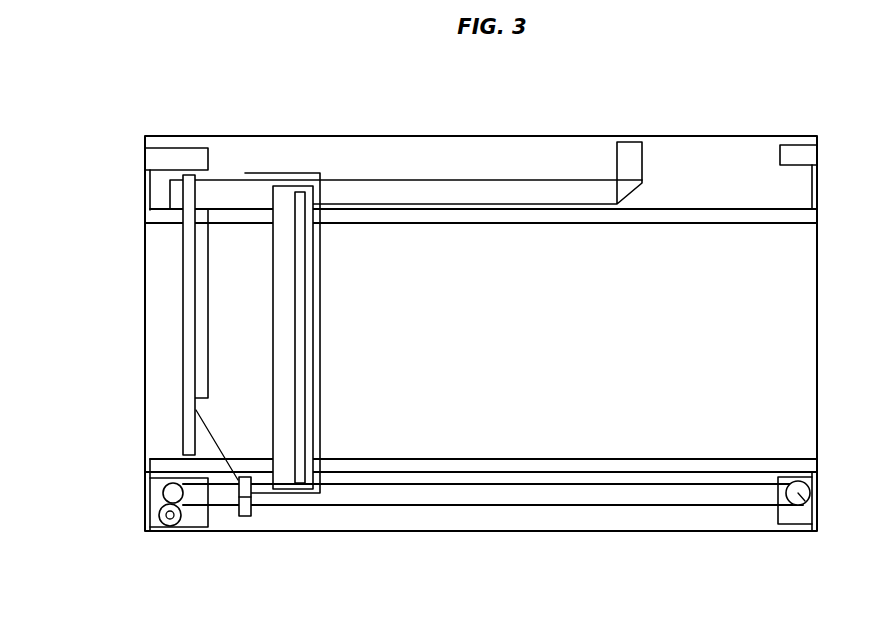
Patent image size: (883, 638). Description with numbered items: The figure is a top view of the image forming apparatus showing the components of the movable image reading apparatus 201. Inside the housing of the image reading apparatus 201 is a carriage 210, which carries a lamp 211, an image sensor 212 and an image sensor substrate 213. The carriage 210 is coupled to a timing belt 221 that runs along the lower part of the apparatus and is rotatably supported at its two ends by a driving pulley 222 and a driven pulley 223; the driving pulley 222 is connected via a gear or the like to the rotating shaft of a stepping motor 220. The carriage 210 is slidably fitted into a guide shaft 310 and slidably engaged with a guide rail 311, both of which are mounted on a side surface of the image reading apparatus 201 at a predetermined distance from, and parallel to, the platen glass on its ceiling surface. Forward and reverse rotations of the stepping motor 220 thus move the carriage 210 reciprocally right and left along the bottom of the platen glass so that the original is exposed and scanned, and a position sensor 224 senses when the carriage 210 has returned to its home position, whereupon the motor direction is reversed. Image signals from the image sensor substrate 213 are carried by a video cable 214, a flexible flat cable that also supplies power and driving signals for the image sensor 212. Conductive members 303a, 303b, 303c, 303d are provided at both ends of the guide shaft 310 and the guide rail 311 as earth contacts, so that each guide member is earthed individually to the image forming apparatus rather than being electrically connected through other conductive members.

The image reading apparatus 201 is at (701, 147).
The conductive member 303a is at (195, 518).
The conductive member 303b is at (790, 512).
The conductive member 303c is at (158, 162).
The conductive member 303d is at (788, 157).
The guide shaft 310 is at (162, 466).
The guide rail 311 is at (157, 215).
The carriage 210 is at (303, 178).
The lamp 211 is at (298, 223).
The image sensor 212 is at (203, 263).
The image sensor substrate 213 is at (190, 180).
The video cable 214 is at (513, 193).
The stepping motor 220 is at (168, 520).
The timing belt 221 is at (520, 508).
The driving pulley 222 is at (166, 496).
The driven pulley 223 is at (798, 508).
The position sensor 224 is at (238, 514).